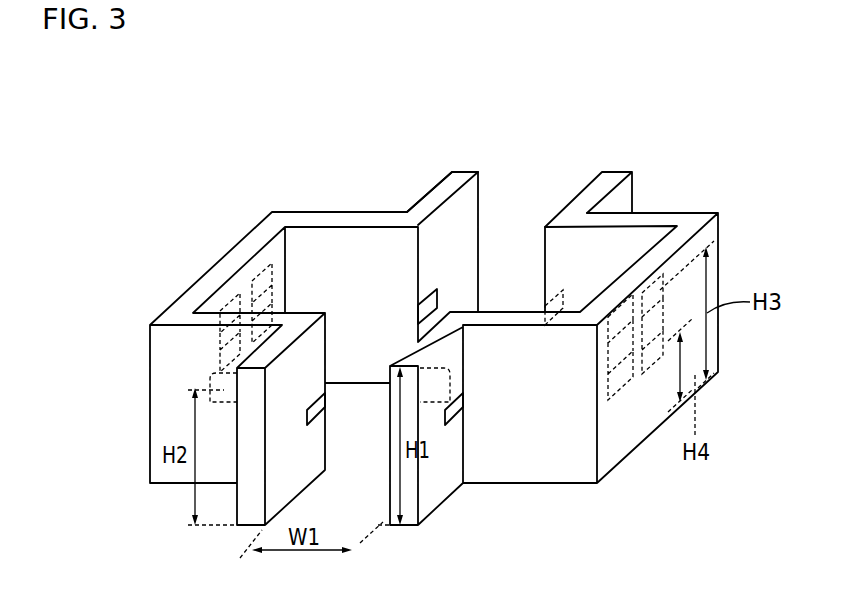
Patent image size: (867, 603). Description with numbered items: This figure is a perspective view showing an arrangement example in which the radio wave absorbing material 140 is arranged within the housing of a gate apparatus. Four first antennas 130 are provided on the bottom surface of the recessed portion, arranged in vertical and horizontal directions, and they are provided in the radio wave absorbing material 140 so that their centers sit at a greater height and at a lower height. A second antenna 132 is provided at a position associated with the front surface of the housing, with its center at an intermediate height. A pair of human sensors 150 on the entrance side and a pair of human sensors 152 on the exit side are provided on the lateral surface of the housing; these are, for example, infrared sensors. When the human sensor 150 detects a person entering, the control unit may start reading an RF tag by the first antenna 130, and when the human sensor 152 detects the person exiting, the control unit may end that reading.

The first antenna 130 is at (267, 277).
The second antenna 132 is at (218, 375).
The radio wave absorbing material 140 is at (613, 173).
The human sensor 150 is at (317, 413).
The human sensor 152 is at (560, 297).